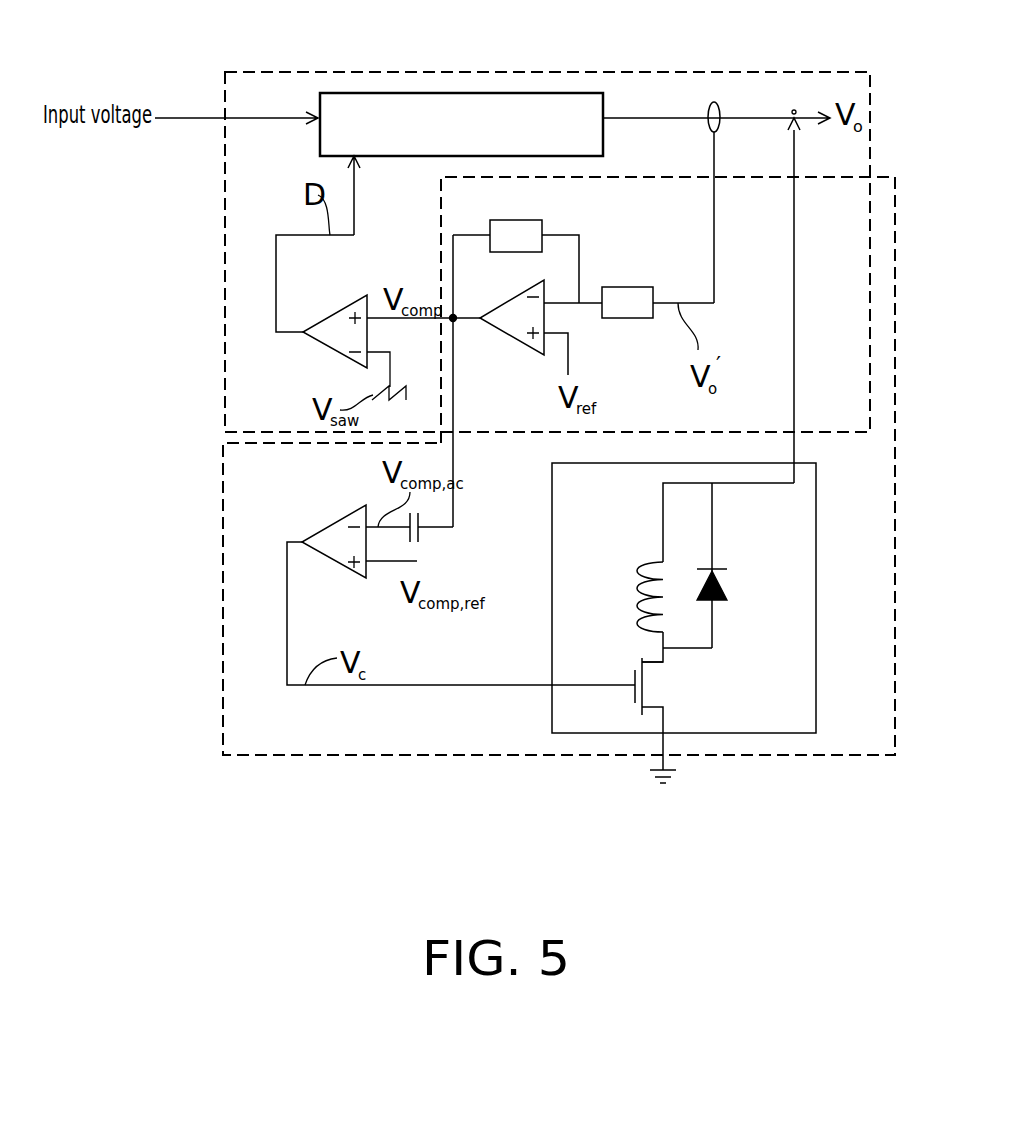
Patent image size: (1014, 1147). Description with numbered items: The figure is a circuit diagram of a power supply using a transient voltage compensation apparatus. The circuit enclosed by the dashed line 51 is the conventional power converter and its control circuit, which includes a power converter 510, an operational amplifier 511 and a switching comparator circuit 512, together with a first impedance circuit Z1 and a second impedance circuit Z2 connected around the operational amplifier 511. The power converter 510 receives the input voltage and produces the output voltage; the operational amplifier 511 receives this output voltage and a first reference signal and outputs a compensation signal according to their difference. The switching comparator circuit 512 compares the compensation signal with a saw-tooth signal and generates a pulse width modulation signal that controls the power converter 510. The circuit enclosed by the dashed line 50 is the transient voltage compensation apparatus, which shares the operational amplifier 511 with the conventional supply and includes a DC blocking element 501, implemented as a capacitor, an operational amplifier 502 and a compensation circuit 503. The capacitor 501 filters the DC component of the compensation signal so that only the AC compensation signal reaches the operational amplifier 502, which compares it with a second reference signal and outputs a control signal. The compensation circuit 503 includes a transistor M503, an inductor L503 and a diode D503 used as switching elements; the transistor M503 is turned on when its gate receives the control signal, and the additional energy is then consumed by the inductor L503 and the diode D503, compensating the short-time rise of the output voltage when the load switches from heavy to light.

The power converter 510 is at (462, 93).
The power converter and control circuit 51 is at (223, 295).
The transient voltage compensation apparatus 50 is at (220, 490).
The switching comparator circuit 512 is at (343, 305).
The operational amplifier 511 is at (510, 338).
The first impedance circuit Z1 is at (518, 220).
The second impedance circuit Z2 is at (630, 287).
The DC blocking element 501 is at (420, 537).
The operational amplifier 502 is at (343, 567).
The compensation circuit 503 is at (713, 623).
The inductor L503 is at (637, 595).
The diode D503 is at (725, 580).
The transistor M503 is at (665, 688).